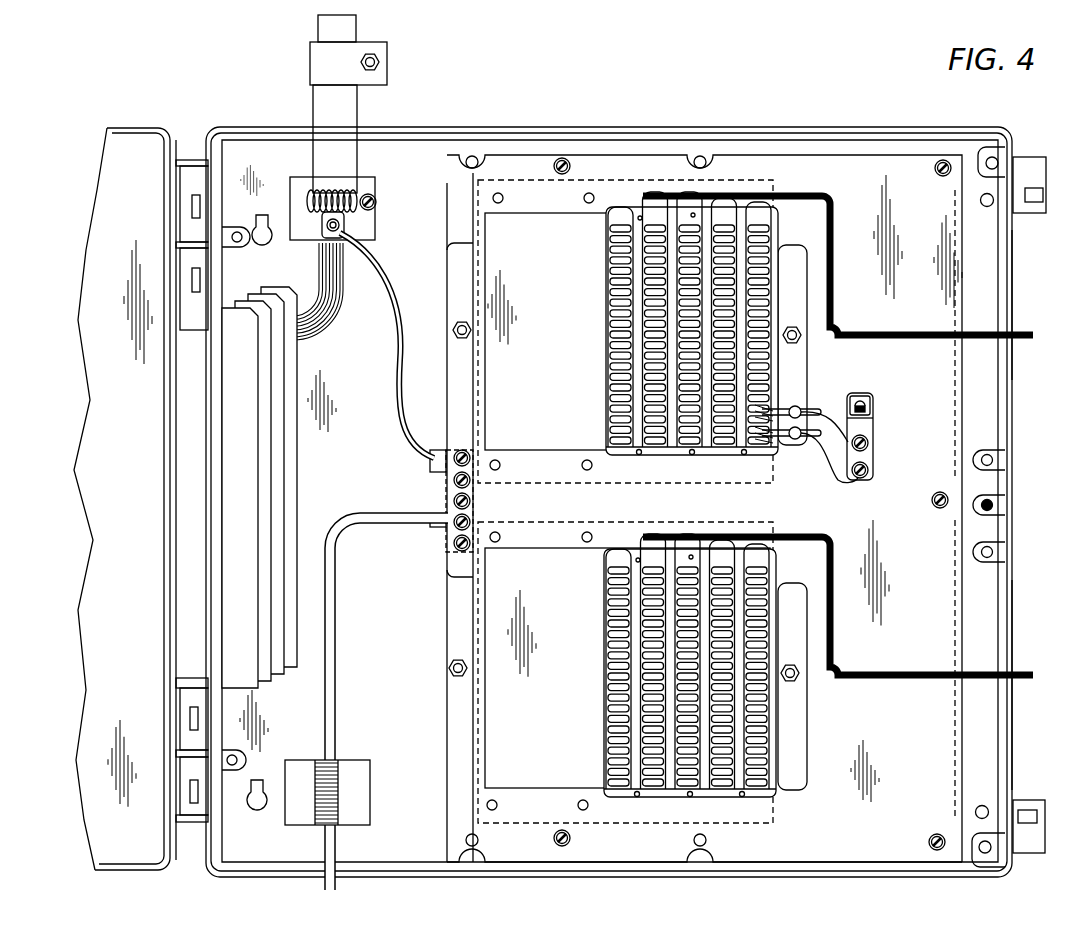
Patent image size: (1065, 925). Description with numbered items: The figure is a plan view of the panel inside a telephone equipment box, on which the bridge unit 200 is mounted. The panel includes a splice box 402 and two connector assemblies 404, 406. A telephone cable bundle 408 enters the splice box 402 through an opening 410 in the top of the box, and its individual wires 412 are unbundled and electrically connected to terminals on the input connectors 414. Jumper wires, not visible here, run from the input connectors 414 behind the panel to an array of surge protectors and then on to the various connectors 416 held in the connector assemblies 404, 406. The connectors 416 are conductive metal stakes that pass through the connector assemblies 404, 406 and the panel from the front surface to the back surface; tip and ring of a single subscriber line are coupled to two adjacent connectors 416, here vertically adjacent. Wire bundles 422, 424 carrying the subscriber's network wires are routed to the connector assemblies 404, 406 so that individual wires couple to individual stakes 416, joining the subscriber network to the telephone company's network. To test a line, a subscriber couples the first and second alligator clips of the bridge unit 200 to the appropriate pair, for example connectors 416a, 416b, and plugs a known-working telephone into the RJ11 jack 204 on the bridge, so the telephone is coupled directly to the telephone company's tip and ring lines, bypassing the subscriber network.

The bridge unit 200 is at (874, 426).
The RJ11 jack 204 is at (872, 402).
The splice box 402 is at (366, 441).
The connector assembly 404 is at (610, 330).
The connector assembly 406 is at (610, 672).
The telephone cable bundle 408 is at (345, 160).
The opening 410 is at (357, 118).
The individual wires 412 is at (338, 328).
The input connectors 414 is at (260, 500).
The connectors 416 is at (612, 260).
The connector 416a is at (800, 405).
The connector 416b is at (806, 445).
The wire bundle 422 is at (897, 331).
The wire bundle 424 is at (897, 671).